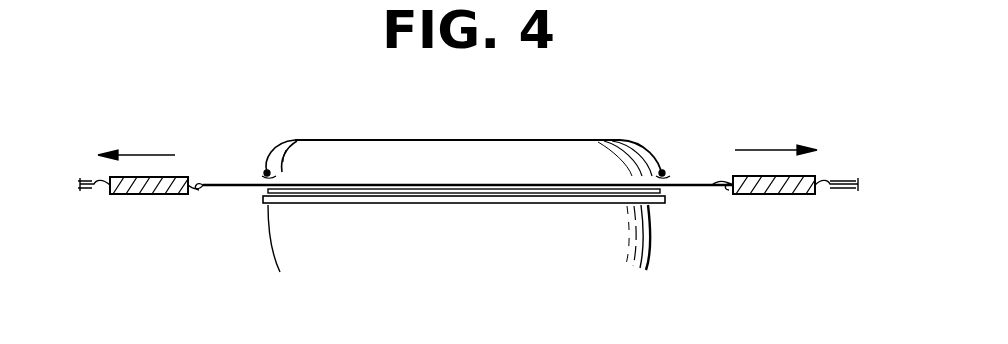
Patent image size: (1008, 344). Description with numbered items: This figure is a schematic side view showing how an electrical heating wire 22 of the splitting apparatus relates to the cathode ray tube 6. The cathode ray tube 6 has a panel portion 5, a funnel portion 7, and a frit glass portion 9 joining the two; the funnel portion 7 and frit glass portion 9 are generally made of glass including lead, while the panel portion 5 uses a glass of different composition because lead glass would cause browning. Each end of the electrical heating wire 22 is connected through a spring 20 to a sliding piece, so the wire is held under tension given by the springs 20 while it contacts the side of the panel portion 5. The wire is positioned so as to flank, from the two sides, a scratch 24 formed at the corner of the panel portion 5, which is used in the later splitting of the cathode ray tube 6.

The panel portion 5 is at (487, 140).
The cathode ray tube 6 is at (273, 270).
The funnel portion 7 is at (556, 238).
The frit glass portion 9 is at (618, 205).
The spring 20 is at (150, 196).
The electrical heating wire 22 is at (266, 171).
The scratch 24 is at (286, 149).